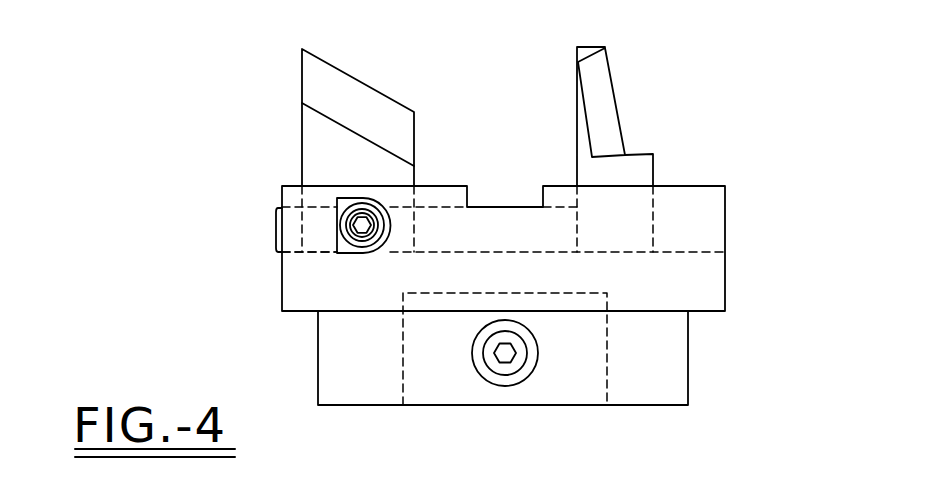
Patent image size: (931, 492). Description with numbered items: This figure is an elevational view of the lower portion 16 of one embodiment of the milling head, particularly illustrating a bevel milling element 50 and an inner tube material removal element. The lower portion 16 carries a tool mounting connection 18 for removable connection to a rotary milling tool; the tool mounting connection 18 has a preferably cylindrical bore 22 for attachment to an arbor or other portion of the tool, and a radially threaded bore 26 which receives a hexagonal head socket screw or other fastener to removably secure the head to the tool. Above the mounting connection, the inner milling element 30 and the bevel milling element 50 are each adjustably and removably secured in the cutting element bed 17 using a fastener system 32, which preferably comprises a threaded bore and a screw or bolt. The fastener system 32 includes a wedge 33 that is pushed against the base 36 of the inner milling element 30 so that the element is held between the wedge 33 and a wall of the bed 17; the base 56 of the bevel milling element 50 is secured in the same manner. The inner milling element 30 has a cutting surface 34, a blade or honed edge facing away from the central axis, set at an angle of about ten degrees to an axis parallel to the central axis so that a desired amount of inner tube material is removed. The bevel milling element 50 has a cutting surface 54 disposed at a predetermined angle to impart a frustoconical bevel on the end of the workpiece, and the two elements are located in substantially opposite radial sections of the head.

The lower portion 16 is at (725, 265).
The cutting element bed 17 is at (700, 221).
The tool mounting connection 18 is at (688, 358).
The bore 22 is at (605, 372).
The radially threaded bore 26 is at (505, 372).
The inner milling element 30 is at (652, 151).
The fastener system 32 is at (327, 255).
The wedge 33 is at (277, 226).
The cutting surface 34 is at (598, 93).
The base 36 is at (577, 207).
The bevel milling element 50 is at (302, 122).
The cutting surface 54 is at (349, 91).
The base 56 is at (414, 207).